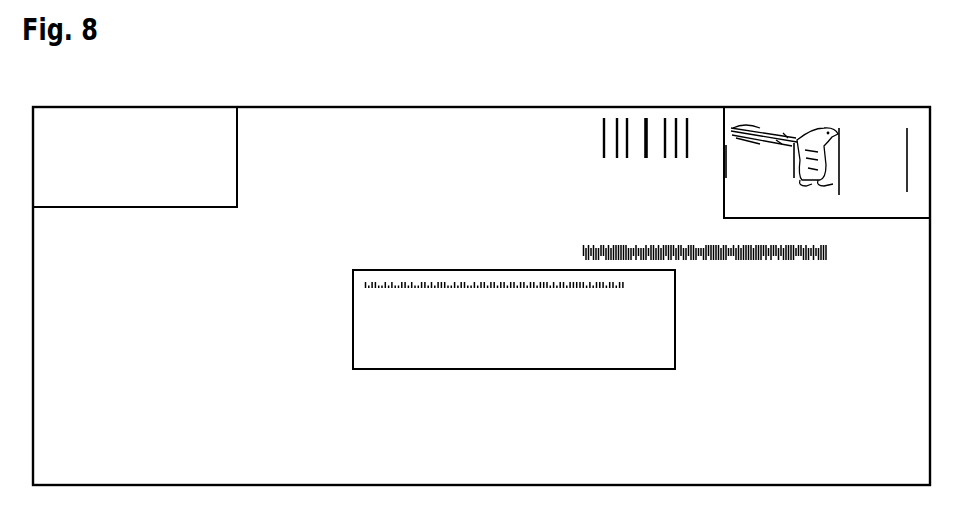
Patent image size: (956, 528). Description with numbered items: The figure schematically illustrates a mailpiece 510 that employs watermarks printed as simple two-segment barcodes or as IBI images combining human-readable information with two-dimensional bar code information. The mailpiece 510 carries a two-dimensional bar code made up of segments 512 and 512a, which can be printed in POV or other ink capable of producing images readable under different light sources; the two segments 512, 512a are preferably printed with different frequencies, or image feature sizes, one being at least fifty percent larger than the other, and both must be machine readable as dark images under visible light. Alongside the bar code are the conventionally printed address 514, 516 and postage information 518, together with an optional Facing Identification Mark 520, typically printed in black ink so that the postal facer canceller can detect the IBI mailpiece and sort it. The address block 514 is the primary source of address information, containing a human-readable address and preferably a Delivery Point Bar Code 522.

The mailpiece 510 is at (483, 84).
The bar code segment 512 is at (578, 238).
The bar code segment 512a is at (810, 268).
The address block 514 is at (442, 370).
The address 516 is at (237, 162).
The postage information 518 is at (845, 125).
The Facing Identification Mark (FIM) 520 is at (652, 125).
The Delivery Point Bar Code (DPBC) 522 is at (442, 270).